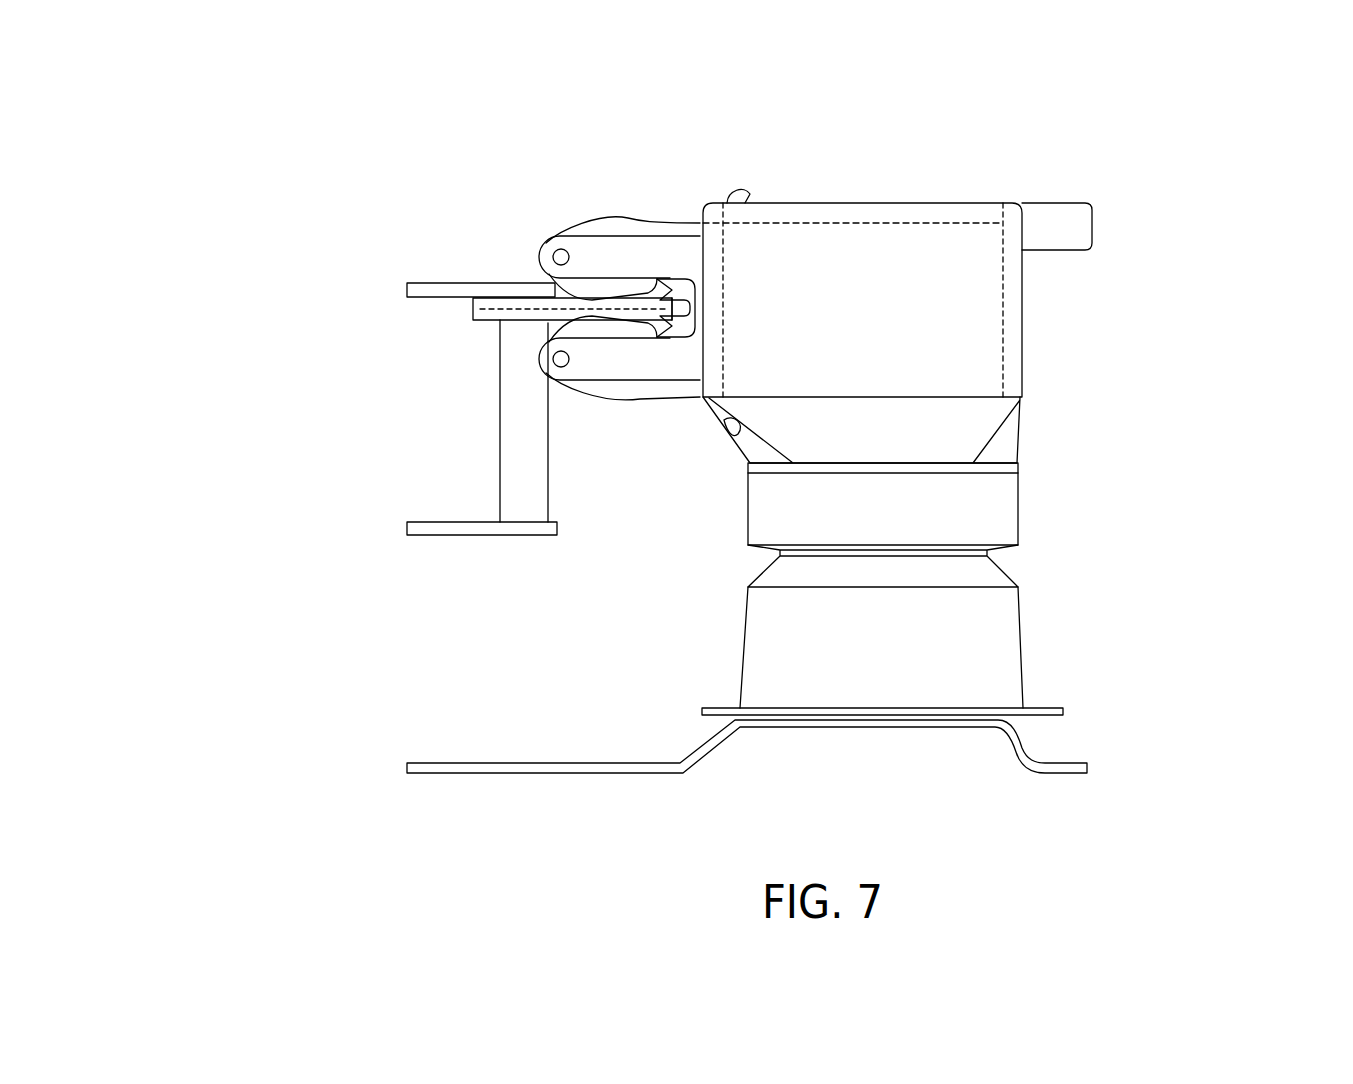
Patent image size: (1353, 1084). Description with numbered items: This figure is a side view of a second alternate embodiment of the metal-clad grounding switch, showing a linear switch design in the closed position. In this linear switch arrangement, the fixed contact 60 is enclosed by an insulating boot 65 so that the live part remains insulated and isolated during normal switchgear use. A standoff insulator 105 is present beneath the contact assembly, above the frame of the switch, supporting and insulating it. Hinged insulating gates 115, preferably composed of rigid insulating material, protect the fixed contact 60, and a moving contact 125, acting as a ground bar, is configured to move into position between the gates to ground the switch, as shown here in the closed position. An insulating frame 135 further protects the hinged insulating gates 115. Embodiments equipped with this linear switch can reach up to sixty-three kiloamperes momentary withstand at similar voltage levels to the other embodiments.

The fixed contact 60 is at (673, 282).
The insulating boot 65 is at (960, 325).
The standoff insulator 105 is at (1023, 628).
The hinged insulating gates 115 is at (555, 322).
The moving contact 125 is at (484, 322).
The insulating frame 135 is at (640, 378).